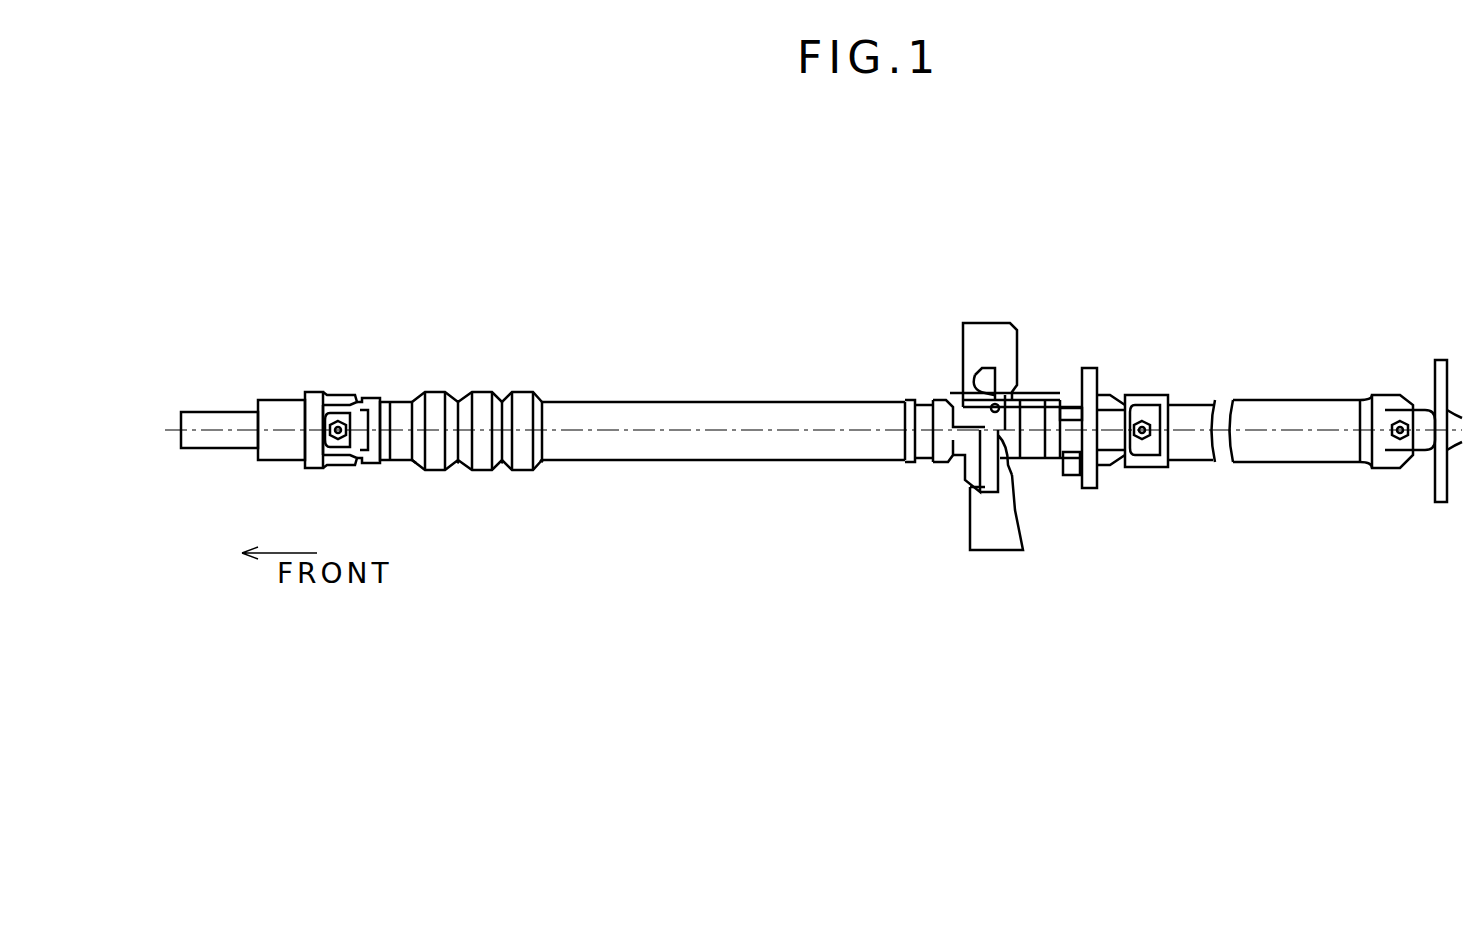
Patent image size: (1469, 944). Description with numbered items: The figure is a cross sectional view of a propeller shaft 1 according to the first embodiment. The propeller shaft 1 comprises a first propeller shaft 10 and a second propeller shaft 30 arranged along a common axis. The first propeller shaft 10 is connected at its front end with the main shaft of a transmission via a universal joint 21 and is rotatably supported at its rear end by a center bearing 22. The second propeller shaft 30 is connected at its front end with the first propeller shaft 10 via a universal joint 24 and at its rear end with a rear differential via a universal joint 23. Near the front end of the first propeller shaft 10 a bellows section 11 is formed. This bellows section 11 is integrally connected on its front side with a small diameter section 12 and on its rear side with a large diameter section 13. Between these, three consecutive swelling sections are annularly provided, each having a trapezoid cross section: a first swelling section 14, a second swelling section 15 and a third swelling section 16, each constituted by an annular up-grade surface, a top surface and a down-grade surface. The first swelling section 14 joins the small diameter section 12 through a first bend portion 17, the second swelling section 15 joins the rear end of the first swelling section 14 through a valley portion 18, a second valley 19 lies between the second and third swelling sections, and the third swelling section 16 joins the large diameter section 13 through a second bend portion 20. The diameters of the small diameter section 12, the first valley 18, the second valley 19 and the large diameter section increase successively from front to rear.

The propeller shaft 1 is at (797, 272).
The first propeller shaft 10 is at (646, 367).
The bellows section 11 is at (468, 368).
The small diameter section 12 is at (395, 403).
The large diameter section 13 is at (598, 401).
The first swelling section 14 is at (437, 391).
The second swelling section 15 is at (482, 392).
The third swelling section 16 is at (528, 392).
The first bend portion 17 is at (408, 465).
The valley portion 18 is at (452, 466).
The second valley 19 is at (497, 466).
The second bend portion 20 is at (540, 466).
The universal joint 21 is at (322, 388).
The center bearing 22 is at (986, 318).
The universal joint 23 is at (1398, 370).
The universal joint 24 is at (1089, 365).
The second propeller shaft 30 is at (1275, 383).